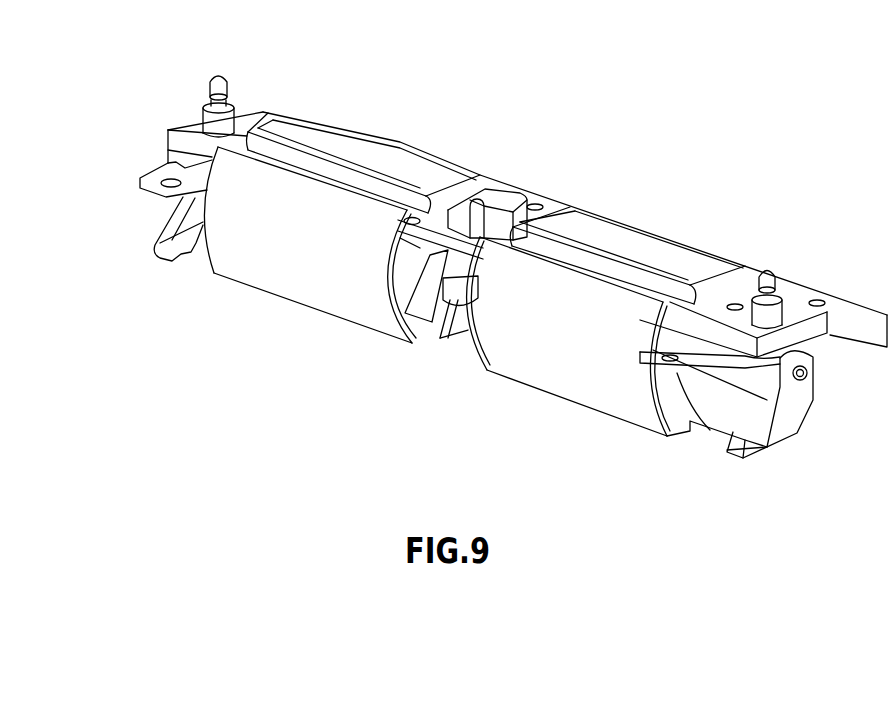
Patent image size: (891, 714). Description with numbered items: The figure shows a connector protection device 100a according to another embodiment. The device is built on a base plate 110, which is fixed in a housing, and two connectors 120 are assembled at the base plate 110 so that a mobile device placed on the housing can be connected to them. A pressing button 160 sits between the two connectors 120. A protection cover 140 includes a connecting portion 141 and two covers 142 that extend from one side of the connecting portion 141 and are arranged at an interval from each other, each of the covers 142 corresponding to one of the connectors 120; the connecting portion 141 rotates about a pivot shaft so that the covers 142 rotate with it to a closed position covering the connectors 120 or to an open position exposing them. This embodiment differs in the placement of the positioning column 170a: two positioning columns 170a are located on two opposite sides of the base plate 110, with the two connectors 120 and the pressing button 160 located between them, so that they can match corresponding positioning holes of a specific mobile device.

The connector protection device 100a is at (150, 336).
The base plate 110 is at (543, 197).
The connectors 120 is at (455, 165).
The pressing button 160 is at (498, 185).
The positioning column 170a is at (222, 74).
The protection cover 140 is at (437, 295).
The connecting portion 141 is at (431, 335).
The covers 142 is at (337, 303).